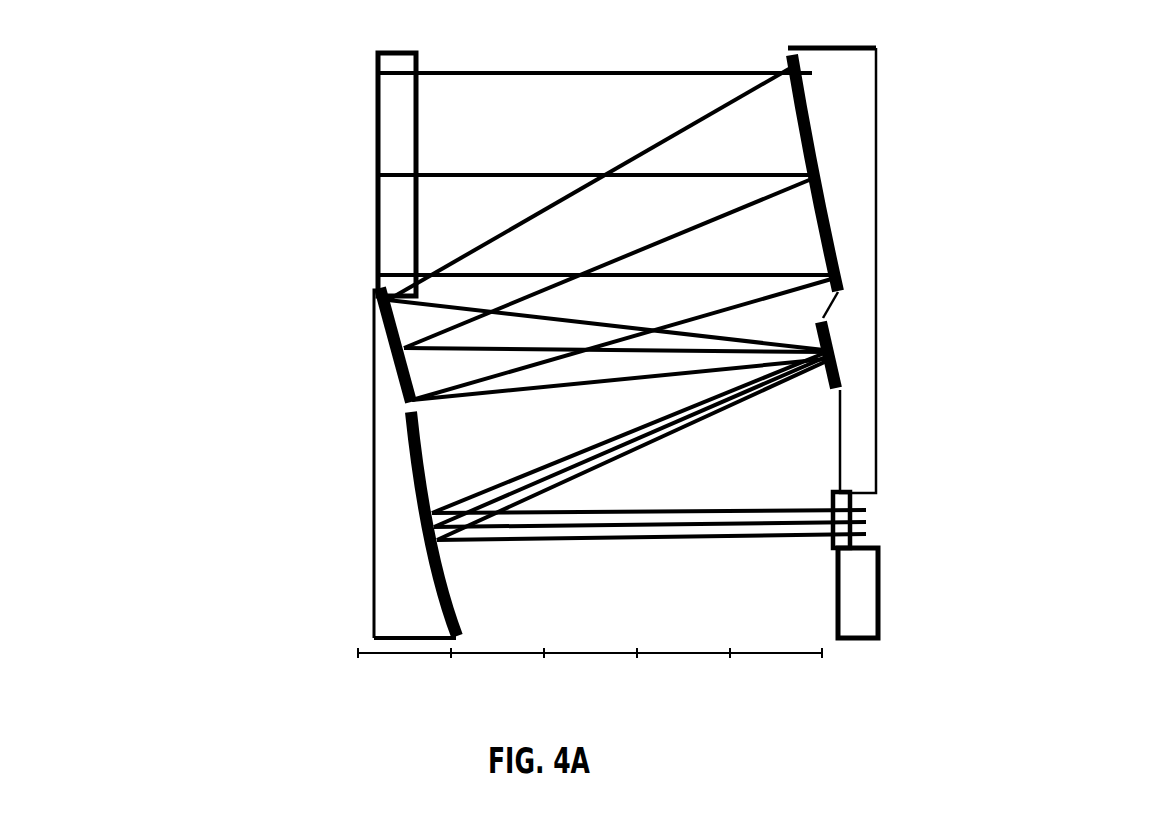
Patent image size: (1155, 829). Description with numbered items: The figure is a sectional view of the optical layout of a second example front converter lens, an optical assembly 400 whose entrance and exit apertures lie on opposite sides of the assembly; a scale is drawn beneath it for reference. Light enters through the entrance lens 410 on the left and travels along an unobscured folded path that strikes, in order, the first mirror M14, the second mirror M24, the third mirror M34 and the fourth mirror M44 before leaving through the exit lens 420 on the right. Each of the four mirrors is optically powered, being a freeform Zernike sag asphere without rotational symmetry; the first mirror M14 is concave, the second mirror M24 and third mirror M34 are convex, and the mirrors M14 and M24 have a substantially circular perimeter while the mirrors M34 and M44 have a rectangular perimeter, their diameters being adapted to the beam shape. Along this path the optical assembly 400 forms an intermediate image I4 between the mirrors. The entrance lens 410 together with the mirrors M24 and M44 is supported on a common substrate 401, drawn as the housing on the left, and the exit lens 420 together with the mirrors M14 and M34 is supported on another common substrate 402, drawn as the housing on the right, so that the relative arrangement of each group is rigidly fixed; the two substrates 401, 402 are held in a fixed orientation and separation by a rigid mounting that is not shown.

The optical assembly 400 is at (1003, 597).
The common substrate 401 is at (383, 485).
The common substrate 402 is at (858, 234).
The entrance lens 410 is at (383, 147).
The exit lens 420 is at (852, 514).
The first mirror M14 is at (818, 143).
The second mirror M24 is at (397, 357).
The third mirror M34 is at (833, 358).
The fourth mirror M44 is at (430, 597).
The intermediate image I4 is at (682, 423).